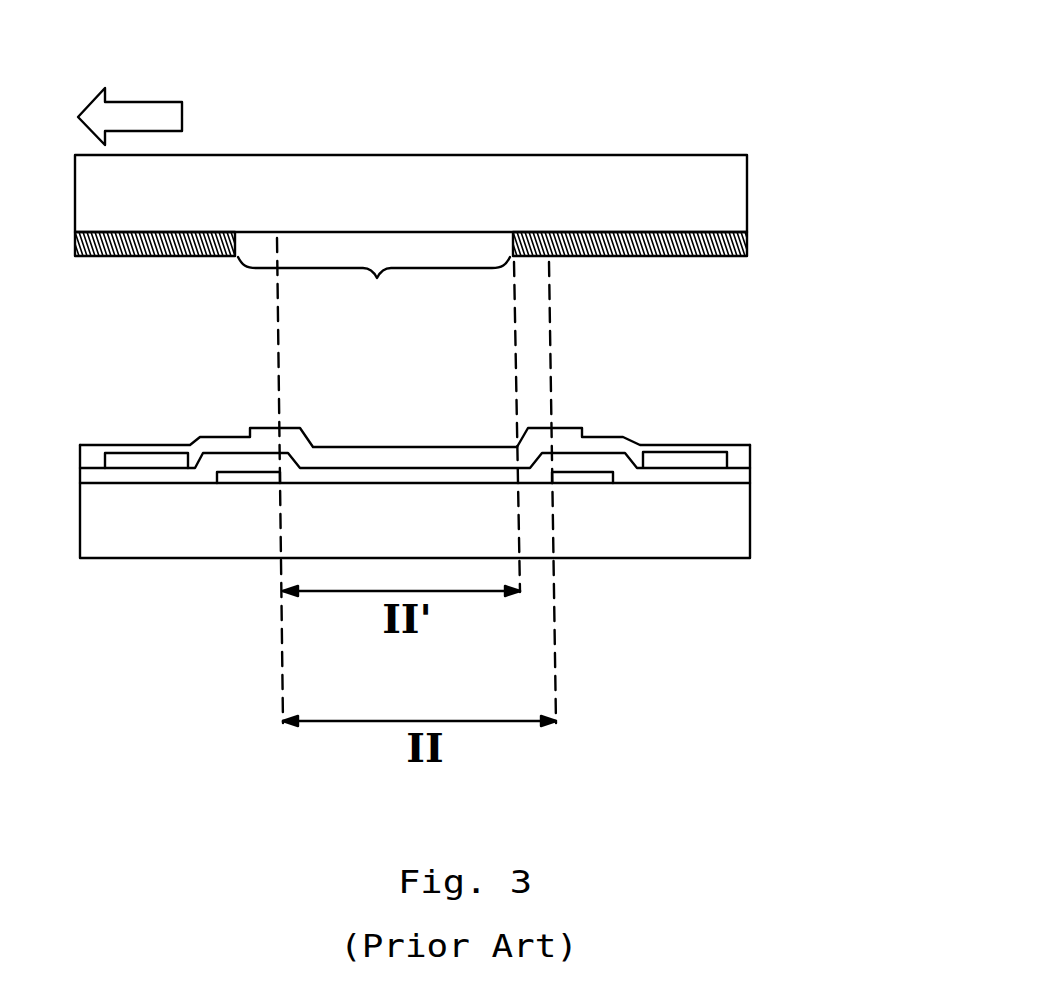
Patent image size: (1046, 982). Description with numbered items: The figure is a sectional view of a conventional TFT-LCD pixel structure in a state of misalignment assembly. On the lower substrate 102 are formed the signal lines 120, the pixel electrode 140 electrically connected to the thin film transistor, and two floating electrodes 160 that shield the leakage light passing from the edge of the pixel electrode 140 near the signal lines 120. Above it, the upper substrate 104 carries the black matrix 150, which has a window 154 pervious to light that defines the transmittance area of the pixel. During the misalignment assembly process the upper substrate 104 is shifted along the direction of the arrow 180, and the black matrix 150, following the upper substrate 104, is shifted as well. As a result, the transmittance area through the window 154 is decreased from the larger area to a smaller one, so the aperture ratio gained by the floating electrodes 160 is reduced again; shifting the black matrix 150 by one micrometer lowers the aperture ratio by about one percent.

The lower substrate 102 is at (715, 517).
The upper substrate 104 is at (715, 178).
The signal lines 120 is at (142, 463).
The pixel electrode 140 is at (565, 429).
The black matrix 150 is at (747, 240).
The window 154 is at (374, 289).
The floating electrodes 160 is at (240, 477).
The arrow 180 is at (157, 106).